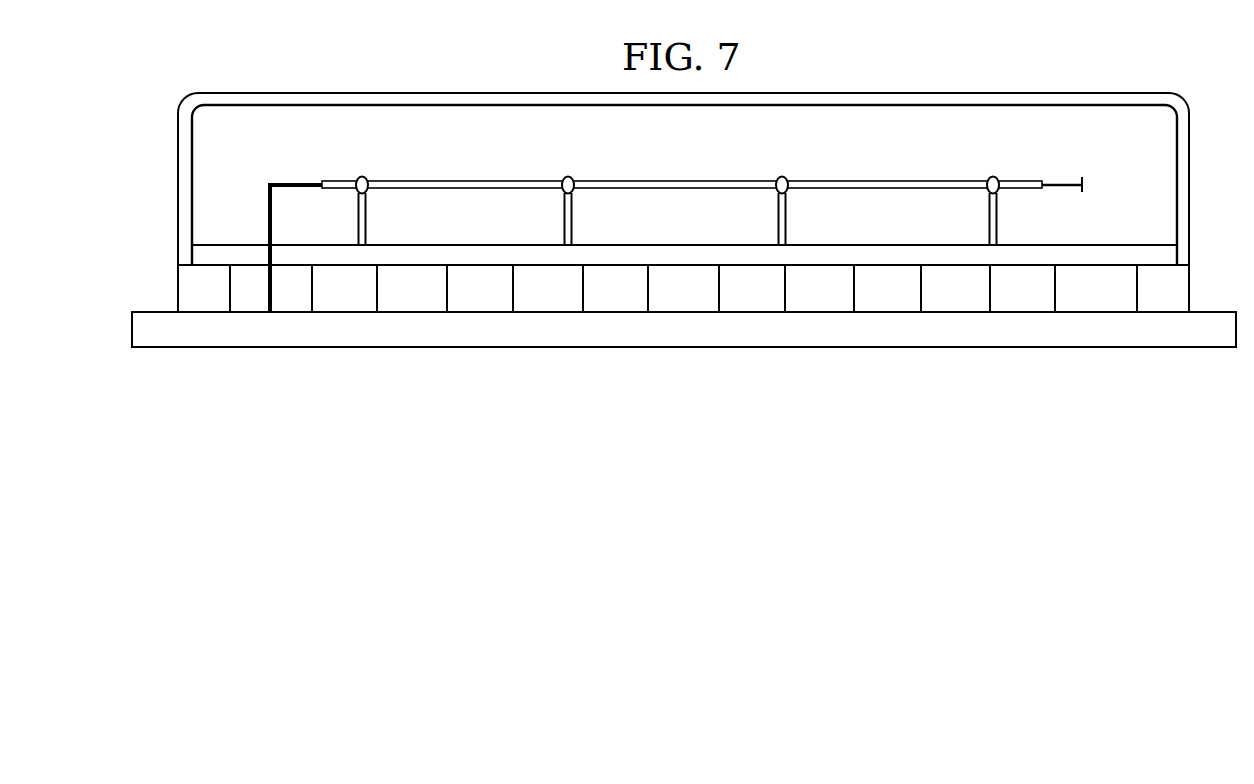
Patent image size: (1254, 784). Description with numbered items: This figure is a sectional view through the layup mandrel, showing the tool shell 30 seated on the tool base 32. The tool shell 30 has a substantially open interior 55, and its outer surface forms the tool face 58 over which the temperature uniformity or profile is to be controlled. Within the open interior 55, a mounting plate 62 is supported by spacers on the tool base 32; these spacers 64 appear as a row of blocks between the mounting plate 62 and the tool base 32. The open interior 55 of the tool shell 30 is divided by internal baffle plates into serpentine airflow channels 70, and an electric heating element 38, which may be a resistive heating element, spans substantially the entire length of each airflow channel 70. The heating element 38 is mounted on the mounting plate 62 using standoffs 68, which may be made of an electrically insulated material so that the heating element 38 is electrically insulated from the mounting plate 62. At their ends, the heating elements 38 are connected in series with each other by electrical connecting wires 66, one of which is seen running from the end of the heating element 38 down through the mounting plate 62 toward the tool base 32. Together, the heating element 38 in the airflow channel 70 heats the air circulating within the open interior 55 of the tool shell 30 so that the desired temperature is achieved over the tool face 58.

The tool shell 30 is at (844, 88).
The tool base 32 is at (683, 341).
The electric heating elements 38 is at (473, 181).
The open interior 55 is at (193, 185).
The tool face 58 is at (480, 93).
The mounting plate 62 is at (1131, 251).
The support blocks 64 is at (186, 283).
The electrical connecting wires 66 is at (293, 183).
The standoffs 68 is at (368, 226).
The serpentine airflow channels 70 is at (702, 160).